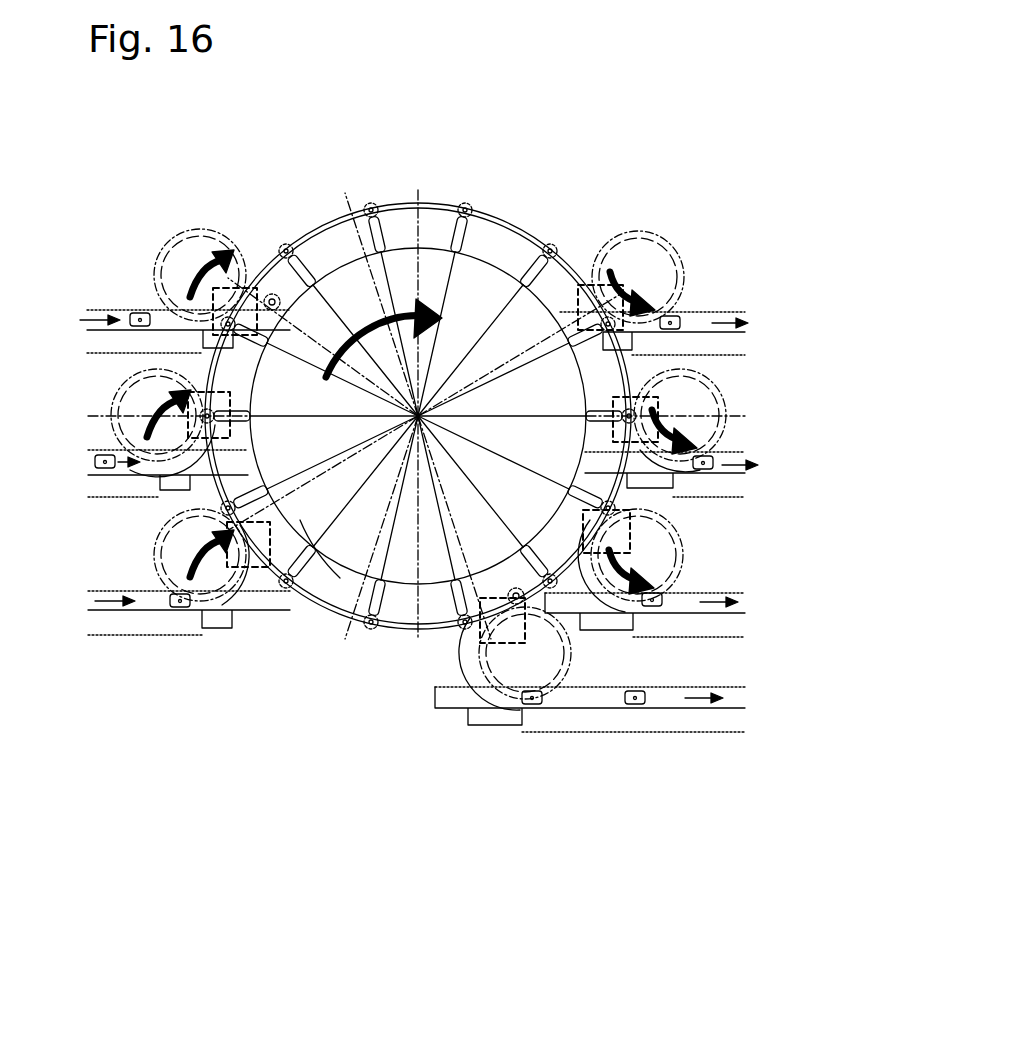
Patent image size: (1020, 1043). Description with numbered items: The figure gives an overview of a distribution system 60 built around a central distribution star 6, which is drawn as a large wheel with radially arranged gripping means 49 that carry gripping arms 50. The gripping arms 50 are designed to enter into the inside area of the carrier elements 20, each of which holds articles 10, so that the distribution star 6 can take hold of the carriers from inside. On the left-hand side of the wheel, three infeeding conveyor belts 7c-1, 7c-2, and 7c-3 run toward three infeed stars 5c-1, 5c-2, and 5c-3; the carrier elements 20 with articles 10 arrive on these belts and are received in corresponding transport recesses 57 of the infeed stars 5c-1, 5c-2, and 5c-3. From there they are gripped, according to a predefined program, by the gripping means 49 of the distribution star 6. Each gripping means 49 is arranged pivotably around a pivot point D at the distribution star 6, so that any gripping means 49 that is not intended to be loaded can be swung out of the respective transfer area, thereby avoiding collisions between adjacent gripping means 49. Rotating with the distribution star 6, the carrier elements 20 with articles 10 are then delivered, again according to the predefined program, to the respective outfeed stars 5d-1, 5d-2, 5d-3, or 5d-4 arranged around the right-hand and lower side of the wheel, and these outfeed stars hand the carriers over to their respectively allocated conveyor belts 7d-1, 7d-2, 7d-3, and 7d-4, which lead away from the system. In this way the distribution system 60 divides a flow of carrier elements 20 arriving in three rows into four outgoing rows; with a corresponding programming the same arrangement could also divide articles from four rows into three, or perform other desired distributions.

The distribution star 6 is at (426, 428).
The distribution system 60 is at (310, 842).
The transport recesses 57 is at (160, 282).
The gripping means 49 is at (305, 565).
The gripping arms 50 is at (375, 610).
The pivot point D is at (320, 565).
The infeed star 5c-1 is at (160, 560).
The infeed star 5c-2 is at (150, 420).
The infeed star 5c-3 is at (205, 248).
The outfeed star 5d-1 is at (645, 248).
The outfeed star 5d-2 is at (690, 416).
The outfeed star 5d-3 is at (655, 568).
The outfeed star 5d-4 is at (548, 668).
The infeeding conveyor belt 7c-1 is at (140, 603).
The infeeding conveyor belt 7c-2 is at (140, 466).
The infeeding conveyor belt 7c-3 is at (125, 318).
The conveyor belt 7d-1 is at (725, 334).
The conveyor belt 7d-2 is at (722, 472).
The conveyor belt 7d-3 is at (712, 606).
The conveyor belt 7d-4 is at (660, 712).
The carrier elements 20 is at (678, 318).
The articles 10 is at (193, 612).